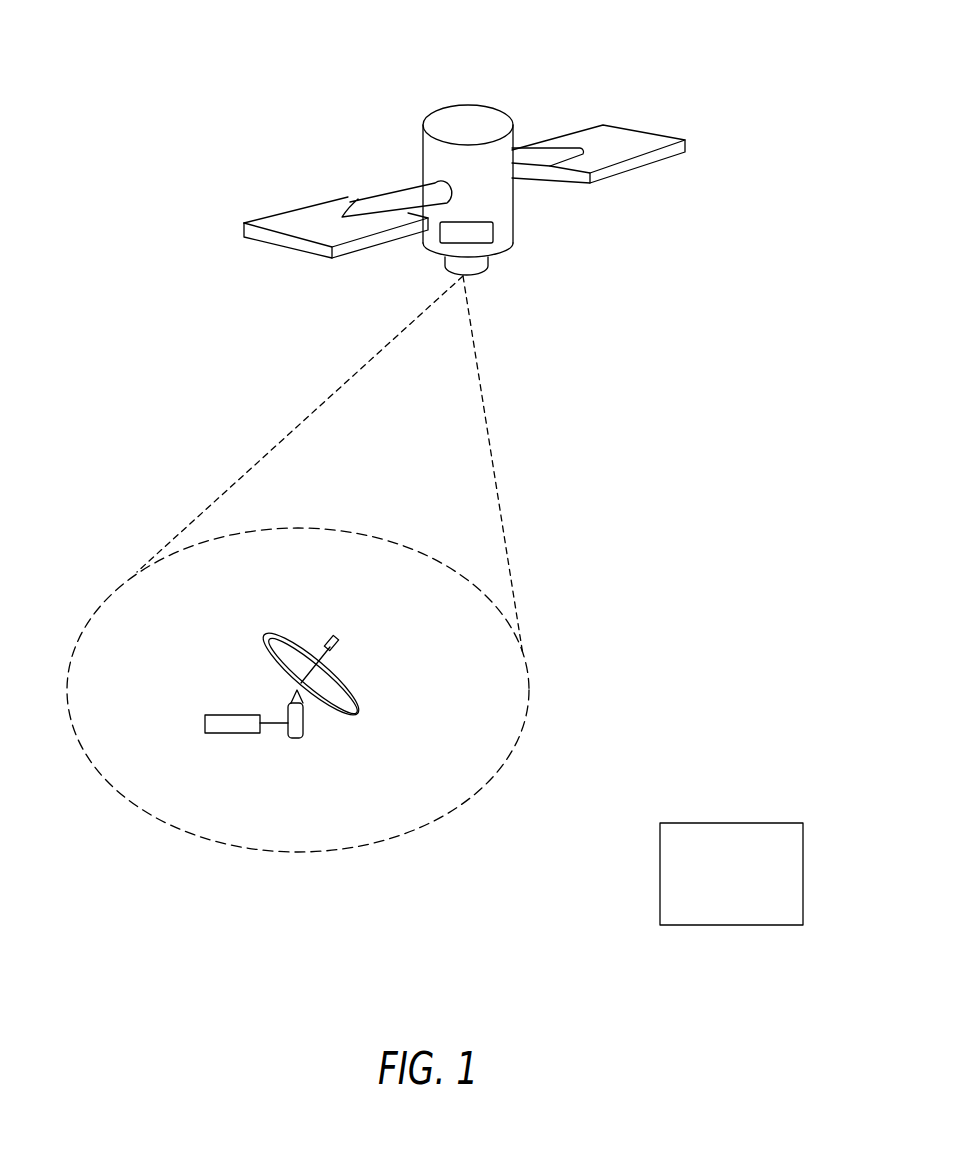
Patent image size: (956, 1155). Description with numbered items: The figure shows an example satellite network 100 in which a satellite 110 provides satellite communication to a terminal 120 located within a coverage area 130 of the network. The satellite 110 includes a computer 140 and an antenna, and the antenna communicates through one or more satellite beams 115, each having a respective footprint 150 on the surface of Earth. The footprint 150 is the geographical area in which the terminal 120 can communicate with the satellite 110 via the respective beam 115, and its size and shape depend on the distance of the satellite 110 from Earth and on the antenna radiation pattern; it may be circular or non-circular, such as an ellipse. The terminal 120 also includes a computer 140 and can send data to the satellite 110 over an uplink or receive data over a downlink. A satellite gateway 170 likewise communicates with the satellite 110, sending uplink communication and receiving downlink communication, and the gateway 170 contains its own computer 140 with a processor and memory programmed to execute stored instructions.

The satellite network 100 is at (757, 86).
The satellite 110 is at (440, 108).
The satellite beam 115 is at (310, 413).
The terminal 120 is at (350, 687).
The coverage area 130 is at (678, 333).
The computer 140 is at (493, 233).
The footprint 150 is at (263, 851).
The satellite gateway 170 is at (752, 904).